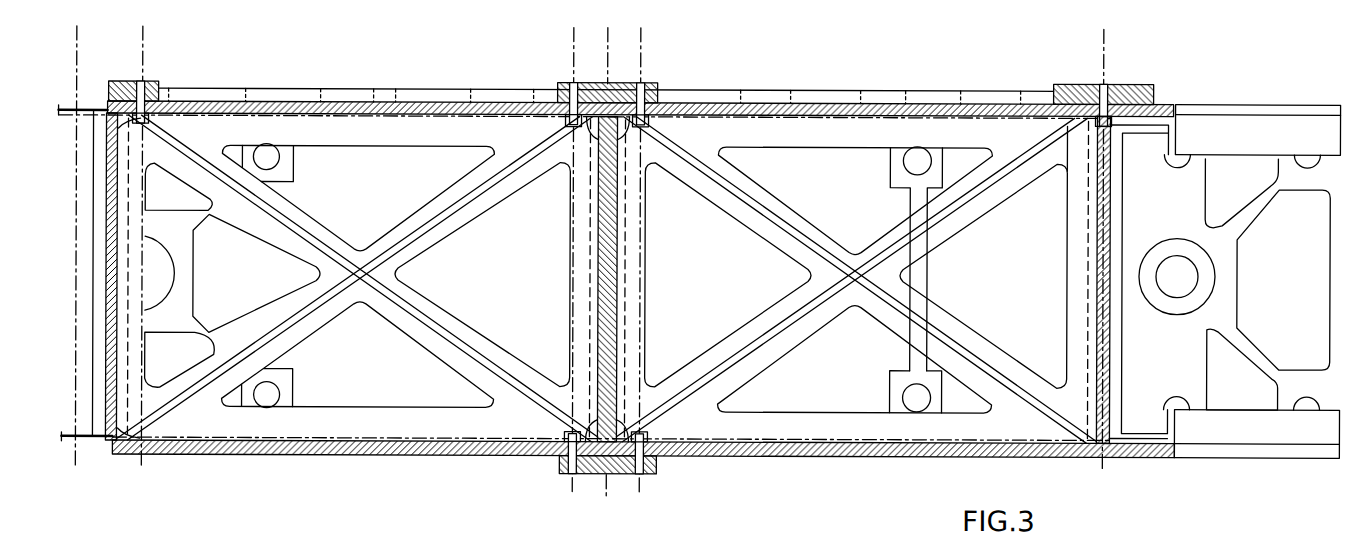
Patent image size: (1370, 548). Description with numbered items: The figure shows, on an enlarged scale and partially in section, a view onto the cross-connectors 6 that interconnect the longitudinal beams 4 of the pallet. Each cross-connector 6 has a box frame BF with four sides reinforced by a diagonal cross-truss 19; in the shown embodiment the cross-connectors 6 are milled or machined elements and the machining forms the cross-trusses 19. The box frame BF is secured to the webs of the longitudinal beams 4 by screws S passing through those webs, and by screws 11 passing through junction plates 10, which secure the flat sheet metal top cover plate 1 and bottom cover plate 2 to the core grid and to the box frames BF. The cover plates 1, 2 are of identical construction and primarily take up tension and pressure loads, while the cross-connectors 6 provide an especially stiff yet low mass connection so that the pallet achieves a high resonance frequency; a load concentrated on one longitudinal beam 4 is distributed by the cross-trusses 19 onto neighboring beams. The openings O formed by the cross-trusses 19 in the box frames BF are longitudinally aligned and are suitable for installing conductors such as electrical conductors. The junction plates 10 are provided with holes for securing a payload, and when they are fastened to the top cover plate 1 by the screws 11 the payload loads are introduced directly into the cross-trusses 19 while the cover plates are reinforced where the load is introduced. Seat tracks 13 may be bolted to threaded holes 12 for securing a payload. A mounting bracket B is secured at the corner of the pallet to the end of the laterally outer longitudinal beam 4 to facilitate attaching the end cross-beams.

The top cover plate 1 is at (850, 110).
The bottom cover plate 2 is at (872, 455).
The longitudinal beam 4 is at (107, 298).
The cross-connector 6 is at (358, 130).
The junction plate 10 is at (120, 82).
The screw 11 is at (567, 82).
The threaded hole 12 is at (243, 118).
The seat track 13 is at (275, 92).
The diagonal cross-truss 19 is at (442, 208).
The screw S is at (578, 231).
The mounting bracket B is at (1275, 86).
The opening O is at (843, 372).
The box frame BF is at (356, 410).